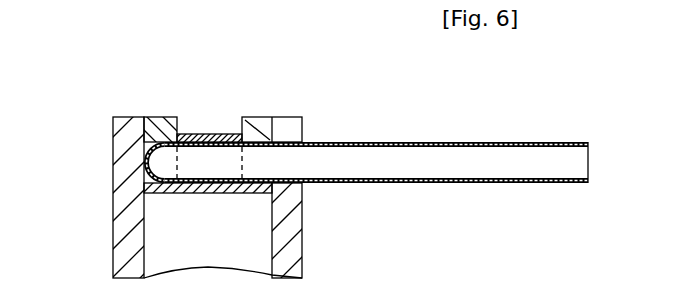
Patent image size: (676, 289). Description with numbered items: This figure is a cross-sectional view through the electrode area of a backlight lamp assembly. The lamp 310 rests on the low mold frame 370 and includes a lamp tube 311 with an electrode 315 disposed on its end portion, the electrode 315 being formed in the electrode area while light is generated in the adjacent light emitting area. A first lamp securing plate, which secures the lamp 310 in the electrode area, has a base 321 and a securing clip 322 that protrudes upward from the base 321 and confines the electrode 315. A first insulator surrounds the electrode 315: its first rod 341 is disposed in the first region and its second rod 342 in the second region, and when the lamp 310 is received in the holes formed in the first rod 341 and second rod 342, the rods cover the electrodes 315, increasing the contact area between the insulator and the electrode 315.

The low mold frame 370 is at (123, 182).
The second rod 342 is at (158, 125).
The securing clip 322 is at (197, 134).
The first rod 341 is at (255, 125).
The lamp 310 is at (310, 116).
The electrode 315 is at (286, 142).
The lamp tube 311 is at (335, 143).
The base 321 is at (148, 173).